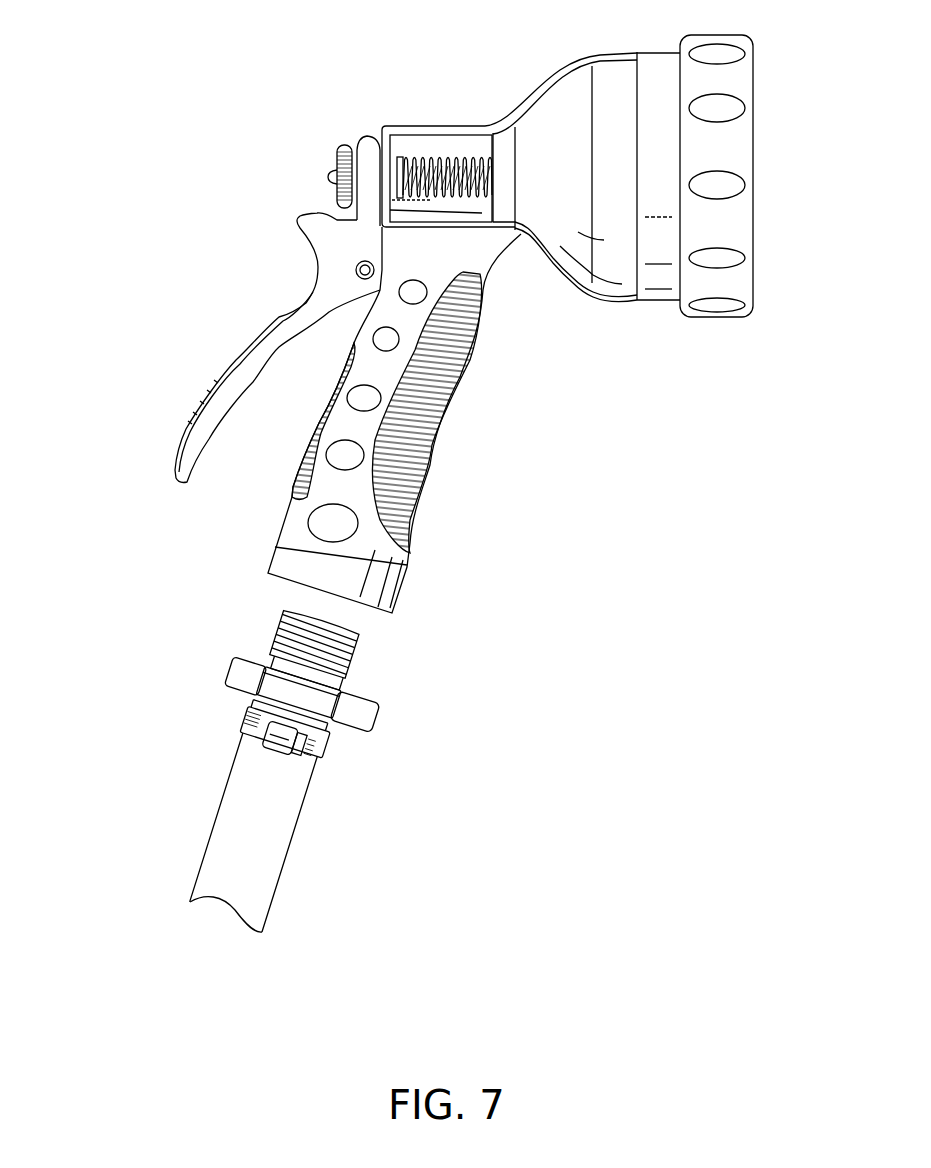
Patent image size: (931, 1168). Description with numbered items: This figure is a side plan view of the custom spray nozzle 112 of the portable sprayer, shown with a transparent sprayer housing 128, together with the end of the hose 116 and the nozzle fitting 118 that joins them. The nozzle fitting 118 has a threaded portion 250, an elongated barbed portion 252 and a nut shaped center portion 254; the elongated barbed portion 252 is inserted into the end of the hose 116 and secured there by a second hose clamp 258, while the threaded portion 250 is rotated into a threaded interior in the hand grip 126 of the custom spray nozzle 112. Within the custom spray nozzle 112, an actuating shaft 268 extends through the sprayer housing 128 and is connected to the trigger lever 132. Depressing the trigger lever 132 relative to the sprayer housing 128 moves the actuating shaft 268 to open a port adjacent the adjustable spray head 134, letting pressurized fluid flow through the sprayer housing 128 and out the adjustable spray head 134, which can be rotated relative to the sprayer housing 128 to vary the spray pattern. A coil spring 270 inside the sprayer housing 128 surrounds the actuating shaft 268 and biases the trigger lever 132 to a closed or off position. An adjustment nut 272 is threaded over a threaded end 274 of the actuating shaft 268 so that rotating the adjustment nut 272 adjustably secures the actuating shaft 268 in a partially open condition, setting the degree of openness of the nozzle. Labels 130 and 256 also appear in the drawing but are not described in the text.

The custom spray nozzle 112 is at (306, 71).
The hose 116 is at (277, 898).
The nozzle fitting 118 is at (194, 686).
The hand grip 126 is at (420, 487).
The sprayer housing 128 is at (553, 80).
The valve assembly 130 is at (408, 118).
The trigger lever 132 is at (235, 365).
The adjustable spray head 134 is at (735, 220).
The threaded portion 250 is at (355, 663).
The elongated barbed portion 252 is at (320, 735).
The nut shaped center portion 254 is at (365, 715).
The nut flange 256 is at (243, 675).
The second hose clamp 258 is at (247, 723).
The actuating shaft 268 is at (430, 155).
The coil spring 270 is at (452, 157).
The adjustment nut 272 is at (343, 147).
The threaded end 274 is at (330, 178).